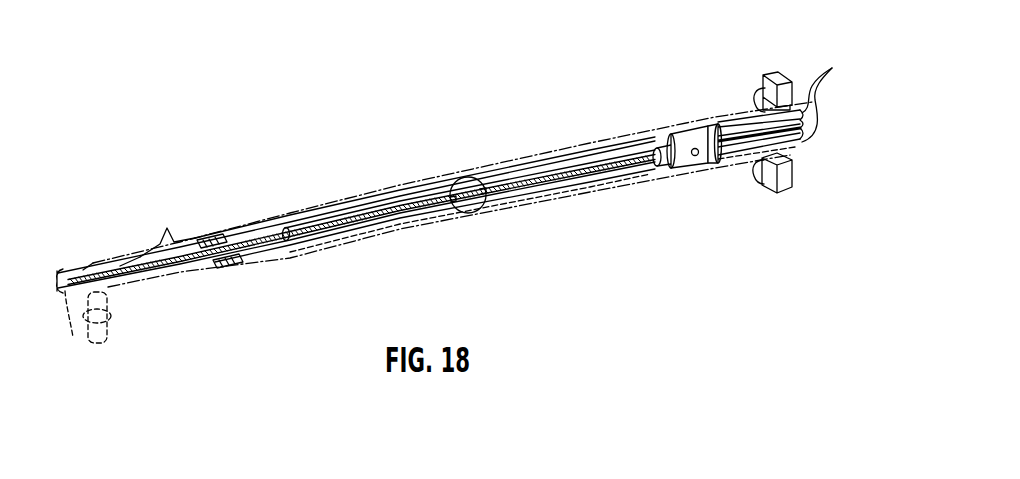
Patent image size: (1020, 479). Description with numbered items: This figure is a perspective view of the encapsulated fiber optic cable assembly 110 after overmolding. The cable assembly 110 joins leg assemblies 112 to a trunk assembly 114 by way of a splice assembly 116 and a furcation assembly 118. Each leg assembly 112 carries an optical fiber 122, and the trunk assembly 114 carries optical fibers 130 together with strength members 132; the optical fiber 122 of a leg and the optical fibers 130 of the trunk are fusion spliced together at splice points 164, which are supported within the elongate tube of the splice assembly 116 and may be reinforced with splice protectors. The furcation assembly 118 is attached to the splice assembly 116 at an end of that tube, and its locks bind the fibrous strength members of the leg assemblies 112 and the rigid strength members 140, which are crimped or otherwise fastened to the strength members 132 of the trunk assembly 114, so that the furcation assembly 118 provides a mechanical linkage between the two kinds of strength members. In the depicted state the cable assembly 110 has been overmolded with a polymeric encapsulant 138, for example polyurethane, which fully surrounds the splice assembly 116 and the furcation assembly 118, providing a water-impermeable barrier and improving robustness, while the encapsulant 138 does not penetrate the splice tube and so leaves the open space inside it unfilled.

The fiber optic cable assembly 110 is at (96, 188).
The leg assembly 112 is at (808, 124).
The trunk assembly 114 is at (84, 328).
The splice assembly 116 is at (460, 229).
The furcation assembly 118 is at (666, 86).
The optical fiber 122 is at (573, 168).
The optical fibers 130 is at (357, 207).
The strength members 132 is at (167, 228).
The polymeric encapsulant 138 is at (658, 180).
The rigid strength members 140 is at (322, 243).
The splice points 164 is at (473, 176).